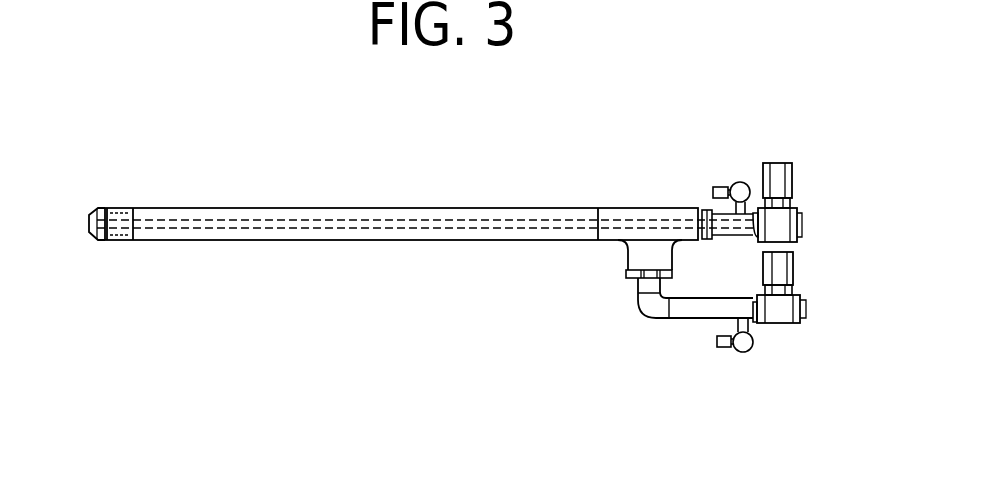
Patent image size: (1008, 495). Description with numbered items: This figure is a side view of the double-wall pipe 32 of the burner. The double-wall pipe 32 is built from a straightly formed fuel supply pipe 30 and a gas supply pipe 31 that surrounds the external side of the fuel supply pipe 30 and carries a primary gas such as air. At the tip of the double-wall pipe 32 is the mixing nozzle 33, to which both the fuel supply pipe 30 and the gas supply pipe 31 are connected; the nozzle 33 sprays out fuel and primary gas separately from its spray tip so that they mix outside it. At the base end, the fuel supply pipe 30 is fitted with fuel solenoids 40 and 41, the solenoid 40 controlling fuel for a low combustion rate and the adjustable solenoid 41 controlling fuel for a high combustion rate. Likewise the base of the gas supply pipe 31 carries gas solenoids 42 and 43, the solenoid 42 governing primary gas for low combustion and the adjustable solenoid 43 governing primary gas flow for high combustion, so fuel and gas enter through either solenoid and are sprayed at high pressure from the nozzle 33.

The fuel supply pipe 30 is at (258, 232).
The gas supply pipe 31 is at (379, 243).
The double-wall pipe 32 is at (320, 201).
The mixing nozzle 33 is at (93, 211).
The fuel solenoid 40 is at (741, 185).
The fuel solenoid 41 is at (776, 170).
The gas solenoid 42 is at (742, 355).
The gas solenoid 43 is at (778, 268).